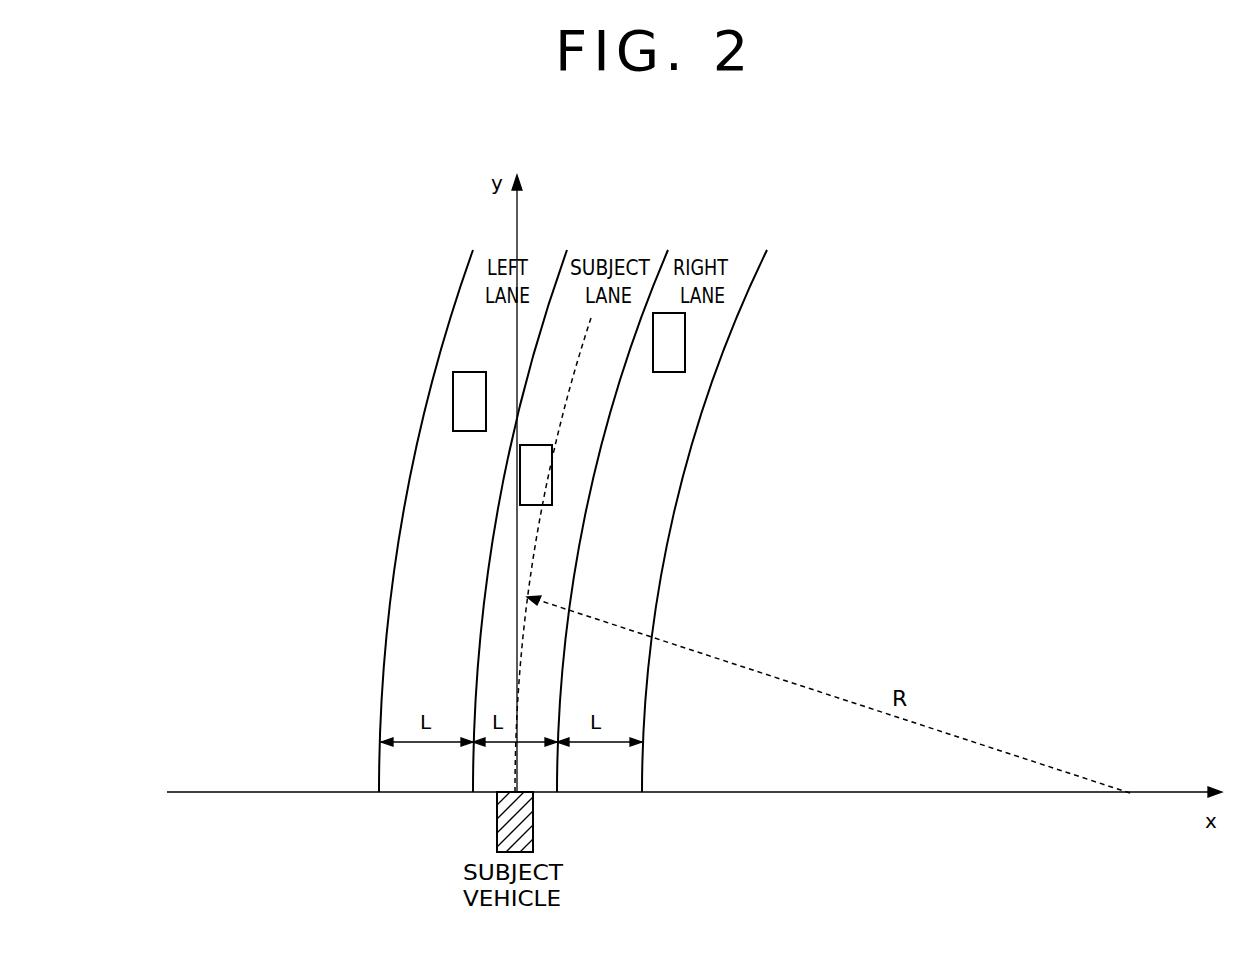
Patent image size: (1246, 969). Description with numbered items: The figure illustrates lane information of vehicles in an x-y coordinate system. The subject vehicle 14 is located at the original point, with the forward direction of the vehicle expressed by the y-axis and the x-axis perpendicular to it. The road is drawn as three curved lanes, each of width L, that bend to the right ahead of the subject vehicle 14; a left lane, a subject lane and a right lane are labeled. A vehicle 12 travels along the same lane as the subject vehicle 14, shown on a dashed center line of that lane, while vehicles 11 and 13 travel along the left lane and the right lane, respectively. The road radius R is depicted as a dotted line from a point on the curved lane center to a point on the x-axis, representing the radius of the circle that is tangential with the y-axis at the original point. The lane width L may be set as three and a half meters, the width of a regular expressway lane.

The vehicle 11 is at (453, 385).
The vehicle 12 is at (520, 461).
The vehicle 13 is at (686, 341).
The subject vehicle 14 is at (535, 825).